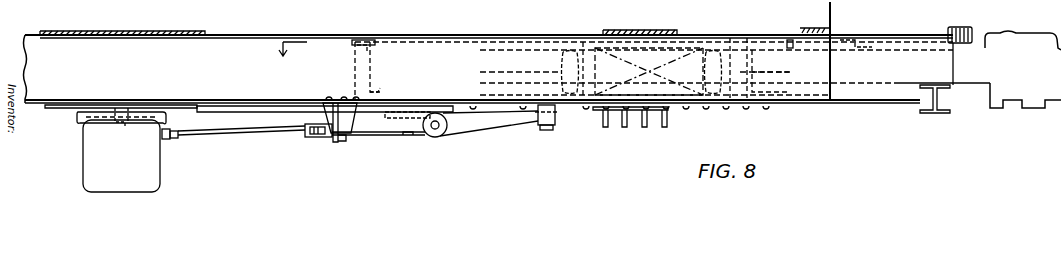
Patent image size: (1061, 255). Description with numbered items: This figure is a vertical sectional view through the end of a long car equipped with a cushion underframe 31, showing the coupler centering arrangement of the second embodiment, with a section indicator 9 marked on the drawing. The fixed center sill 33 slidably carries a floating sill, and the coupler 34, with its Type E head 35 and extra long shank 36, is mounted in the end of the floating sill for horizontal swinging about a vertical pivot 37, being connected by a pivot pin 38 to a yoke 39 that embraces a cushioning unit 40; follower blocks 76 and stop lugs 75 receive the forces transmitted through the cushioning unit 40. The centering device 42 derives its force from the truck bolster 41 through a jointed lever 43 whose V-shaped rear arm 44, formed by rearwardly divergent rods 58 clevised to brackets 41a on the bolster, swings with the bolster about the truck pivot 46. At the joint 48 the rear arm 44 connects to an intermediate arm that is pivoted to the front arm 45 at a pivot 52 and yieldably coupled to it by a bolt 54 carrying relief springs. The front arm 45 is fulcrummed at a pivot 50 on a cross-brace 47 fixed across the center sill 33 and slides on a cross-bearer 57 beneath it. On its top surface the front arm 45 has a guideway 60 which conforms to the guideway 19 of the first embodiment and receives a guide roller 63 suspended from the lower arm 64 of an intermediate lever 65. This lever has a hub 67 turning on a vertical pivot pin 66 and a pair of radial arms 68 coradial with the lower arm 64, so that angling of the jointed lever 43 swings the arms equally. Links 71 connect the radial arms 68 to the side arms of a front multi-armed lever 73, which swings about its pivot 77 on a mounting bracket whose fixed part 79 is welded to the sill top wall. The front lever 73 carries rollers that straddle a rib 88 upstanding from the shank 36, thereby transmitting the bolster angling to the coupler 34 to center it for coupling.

The fixed center sill 33 is at (238, 33).
The cushion underframe 31 is at (409, 28).
The section line 9 is at (287, 49).
The vertical pivot pin 66 is at (362, 39).
The radial arms 68 is at (354, 58).
The hub 67 is at (371, 60).
The intermediate lever 65 is at (349, 82).
The lower arm 64 is at (377, 92).
The links 71 is at (443, 44).
The guideway 60 is at (412, 108).
The truck bolster 41 is at (161, 161).
The truck pivot 46 is at (122, 124).
The brackets 41a is at (170, 130).
The rearwardly divergent rods 58 is at (237, 130).
The rear arm 44 is at (229, 137).
The jointed lever 43 is at (263, 146).
The joint 48 is at (326, 137).
The bolt 54 is at (305, 134).
The guide roller 63 is at (352, 126).
The cross-bearer 57 is at (345, 141).
The pivot 52 is at (406, 136).
The centering device 42 is at (439, 145).
The front arm 45 is at (500, 128).
The cross-brace 47 is at (556, 119).
The pivot 50 is at (546, 131).
The yoke 39 is at (648, 30).
The cushioning unit 40 is at (642, 69).
The follower blocks 76 is at (598, 56).
The stop lugs 75 is at (597, 70).
The fixed part 79 is at (570, 38).
The vertical pivot 37 is at (738, 37).
The pivot pin 38 is at (754, 73).
The guideway 19 is at (774, 55).
The pivot 77 is at (790, 39).
The front multi-armed lever 73 is at (847, 29).
The rib 88 is at (868, 40).
The shank 36 is at (889, 84).
The coupler 34 is at (984, 40).
The Type E head 35 is at (1032, 31).